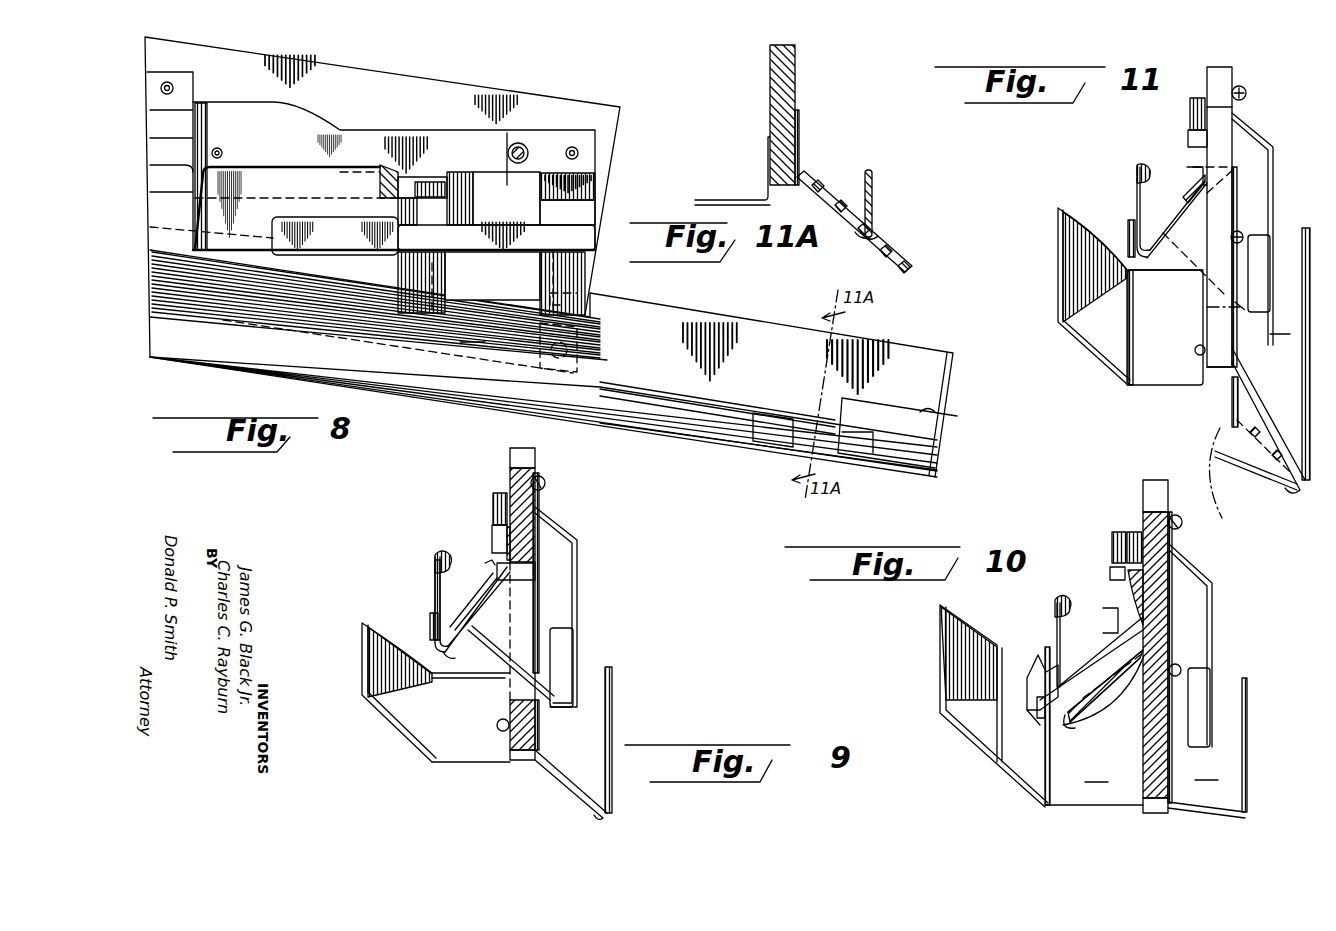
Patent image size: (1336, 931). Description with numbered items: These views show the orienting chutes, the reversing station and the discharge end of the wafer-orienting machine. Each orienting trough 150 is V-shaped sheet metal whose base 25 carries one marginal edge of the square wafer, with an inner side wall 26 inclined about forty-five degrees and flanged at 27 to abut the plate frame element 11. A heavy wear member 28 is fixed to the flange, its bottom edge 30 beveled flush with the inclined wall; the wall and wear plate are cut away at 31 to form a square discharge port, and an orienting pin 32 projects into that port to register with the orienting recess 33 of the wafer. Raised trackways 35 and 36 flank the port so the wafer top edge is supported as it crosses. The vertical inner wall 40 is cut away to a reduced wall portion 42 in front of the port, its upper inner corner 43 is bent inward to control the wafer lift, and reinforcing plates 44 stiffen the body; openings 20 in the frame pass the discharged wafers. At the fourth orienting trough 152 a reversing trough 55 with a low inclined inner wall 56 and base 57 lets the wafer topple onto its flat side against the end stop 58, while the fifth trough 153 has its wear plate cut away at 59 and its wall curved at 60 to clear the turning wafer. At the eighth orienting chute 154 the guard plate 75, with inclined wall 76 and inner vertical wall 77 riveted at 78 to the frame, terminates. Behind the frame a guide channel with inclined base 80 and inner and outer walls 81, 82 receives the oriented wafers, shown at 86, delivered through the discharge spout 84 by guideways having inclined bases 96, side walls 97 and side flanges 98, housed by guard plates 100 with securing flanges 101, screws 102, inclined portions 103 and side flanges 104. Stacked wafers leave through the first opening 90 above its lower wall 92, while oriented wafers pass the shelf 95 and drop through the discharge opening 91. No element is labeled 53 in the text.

In FIG. 8, the plate frame element 11 is at (440, 87).
In FIG. 11, the plate frame element 11 is at (1220, 153).
In FIG. 9, the plate frame element 11 is at (512, 472).
In FIG. 10, the plate frame element 11 is at (1160, 590).
In FIG. 8, the spaced openings 20 is at (553, 300).
In FIG. 9, the spaced openings 20 is at (535, 563).
In FIG. 9, the base of the trough 25 is at (452, 675).
In FIG. 10, the inner side wall 26 is at (1150, 655).
In FIG. 9, the flange 27 is at (530, 530).
In FIG. 8, the wear member 28 is at (362, 140).
In FIG. 11, the wear member 28 is at (1190, 110).
In FIG. 9, the wear member 28 is at (493, 500).
In FIG. 10, the wear member 28 is at (1112, 550).
In FIG. 11, the bottom edge 30 is at (1187, 185).
In FIG. 9, the bottom edge 30 is at (535, 572).
In FIG. 10, the bottom edge 30 is at (1115, 612).
In FIG. 8, the discharge opening 31 is at (540, 222).
In FIG. 9, the discharge opening 31 is at (478, 600).
In FIG. 8, the orienting pin 32 is at (500, 182).
In FIG. 11, the orienting pin 32 is at (1188, 137).
In FIG. 9, the orienting pin 32 is at (492, 548).
In FIG. 10, the orienting pin 32 is at (1110, 573).
In FIG. 9, the orienting recess 33 is at (488, 564).
In FIG. 8, the first trackway 35 is at (430, 177).
In FIG. 9, the first trackway 35 is at (510, 585).
In FIG. 8, the second trackway 36 is at (600, 180).
In FIG. 11, the second trackway 36 is at (1185, 180).
In FIG. 10, the second trackway 36 is at (1103, 622).
In FIG. 8, the inner wall 40 is at (290, 176).
In FIG. 11, the inner wall 40 is at (1137, 195).
In FIG. 9, the inner wall 40 is at (435, 585).
In FIG. 10, the inner wall 40 is at (1055, 625).
In FIG. 8, the reduced wall portion 42 is at (470, 255).
In FIG. 11, the reduced wall portion 42 is at (1148, 225).
In FIG. 9, the reduced wall portion 42 is at (435, 636).
In FIG. 8, the upper inner corner 43 is at (392, 165).
In FIG. 11, the upper inner corner 43 is at (1140, 168).
In FIG. 9, the upper inner corner 43 is at (438, 557).
In FIG. 10, the upper inner corner 43 is at (1058, 600).
In FIG. 8, the reinforcing plates 44 is at (312, 225).
In FIG. 11, the reinforcing plates 44 is at (1128, 228).
In FIG. 9, the reinforcing plates 44 is at (430, 622).
In FIG. 8, the screw 53 is at (576, 146).
In FIG. 10, the reversing trough 55 is at (1030, 725).
In FIG. 10, the inner wall of reversing trough 56 is at (1112, 675).
In FIG. 10, the base of reversing trough 57 is at (1045, 735).
In FIG. 10, the end stop 58 is at (1040, 657).
In FIG. 10, the cut-away portion 59 is at (1148, 612).
In FIG. 10, the arcuate wall portion 60 is at (1110, 725).
In FIG. 8, the guard plate 75 is at (590, 352).
In FIG. 11A, the guard plate 75 is at (745, 190).
In FIG. 11, the guard plate 75 is at (1165, 380).
In FIG. 9, the guard plate 75 is at (448, 760).
In FIG. 10, the guard plate 75 is at (1094, 726).
In FIG. 8, the inclined wall of guard 76 is at (543, 378).
In FIG. 11, the inclined wall of guard 76 is at (1108, 355).
In FIG. 9, the inclined wall of guard 76 is at (410, 725).
In FIG. 10, the inclined wall of guard 76 is at (1040, 785).
In FIG. 11, the inner vertical wall of guard 77 is at (1203, 335).
In FIG. 9, the inner vertical wall of guard 77 is at (510, 712).
In FIG. 10, the inner vertical wall of guard 77 is at (1143, 760).
In FIG. 11, the rivets 78 is at (1195, 350).
In FIG. 9, the rivets 78 is at (505, 740).
In FIG. 8, the inclined base 80 is at (537, 403).
In FIG. 11A, the inclined base 80 is at (838, 225).
In FIG. 11, the inclined base 80 is at (1256, 404).
In FIG. 9, the inclined base 80 is at (560, 785).
In FIG. 10, the inclined base 80 is at (1206, 790).
In FIG. 11A, the inner wall 81 is at (800, 180).
In FIG. 11, the inner wall 81 is at (1232, 395).
In FIG. 9, the inner wall 81 is at (545, 740).
In FIG. 10, the inner wall 81 is at (1172, 765).
In FIG. 8, the outer wall 82 is at (748, 320).
In FIG. 11A, the outer wall 82 is at (875, 178).
In FIG. 11, the outer wall 82 is at (1302, 353).
In FIG. 9, the outer wall 82 is at (613, 708).
In FIG. 10, the outer wall 82 is at (1248, 722).
In FIG. 11, the discharge spout 84 is at (1290, 183).
In FIG. 9, the discharge spout 84 is at (598, 615).
In FIG. 10, the discharge spout 84 is at (1230, 643).
In FIG. 11, the wafer position 86 is at (1250, 440).
In FIG. 8, the first discharge opening 90 is at (860, 442).
In FIG. 11A, the first discharge opening 90 is at (873, 210).
In FIG. 8, the discharge opening 91 is at (940, 410).
In FIG. 8, the lower wall 92 is at (770, 455).
In FIG. 11A, the lower wall 92 is at (875, 232).
In FIG. 8, the shelf 95 is at (895, 468).
In FIG. 11, the shelf 95 is at (1280, 495).
In FIG. 11, the inclined bases of guideways 96 is at (1175, 240).
In FIG. 9, the inclined bases of guideways 96 is at (500, 648).
In FIG. 8, the side walls of guideways 97 is at (520, 292).
In FIG. 11, the side walls of guideways 97 is at (1185, 250).
In FIG. 9, the side walls of guideways 97 is at (535, 580).
In FIG. 11, the side flanges of guideways 98 is at (1240, 205).
In FIG. 9, the side flanges of guideways 98 is at (540, 610).
In FIG. 8, the guard plates 100 is at (475, 165).
In FIG. 11, the guard plates 100 is at (1275, 155).
In FIG. 9, the guard plates 100 is at (580, 578).
In FIG. 10, the guard plates 100 is at (1215, 615).
In FIG. 11, the securing flanges 101 is at (1232, 85).
In FIG. 9, the securing flanges 101 is at (537, 478).
In FIG. 11, the screws 102 is at (1245, 95).
In FIG. 9, the screws 102 is at (545, 493).
In FIG. 10, the screws 102 is at (1183, 524).
In FIG. 11, the inclined portions 103 is at (1252, 135).
In FIG. 9, the inclined portions 103 is at (560, 538).
In FIG. 10, the inclined portions 103 is at (1195, 575).
In FIG. 11, the side flanges of guard 104 is at (1262, 245).
In FIG. 9, the side flanges of guard 104 is at (560, 640).
In FIG. 10, the side flanges of guard 104 is at (1200, 677).
In FIG. 8, the orienting trough 150 is at (183, 75).
In FIG. 10, the fourth orienting trough 152 is at (1115, 530).
In FIG. 10, the fifth orienting trough 153 is at (1133, 530).
In FIG. 8, the eighth orienting chute 154 is at (290, 128).